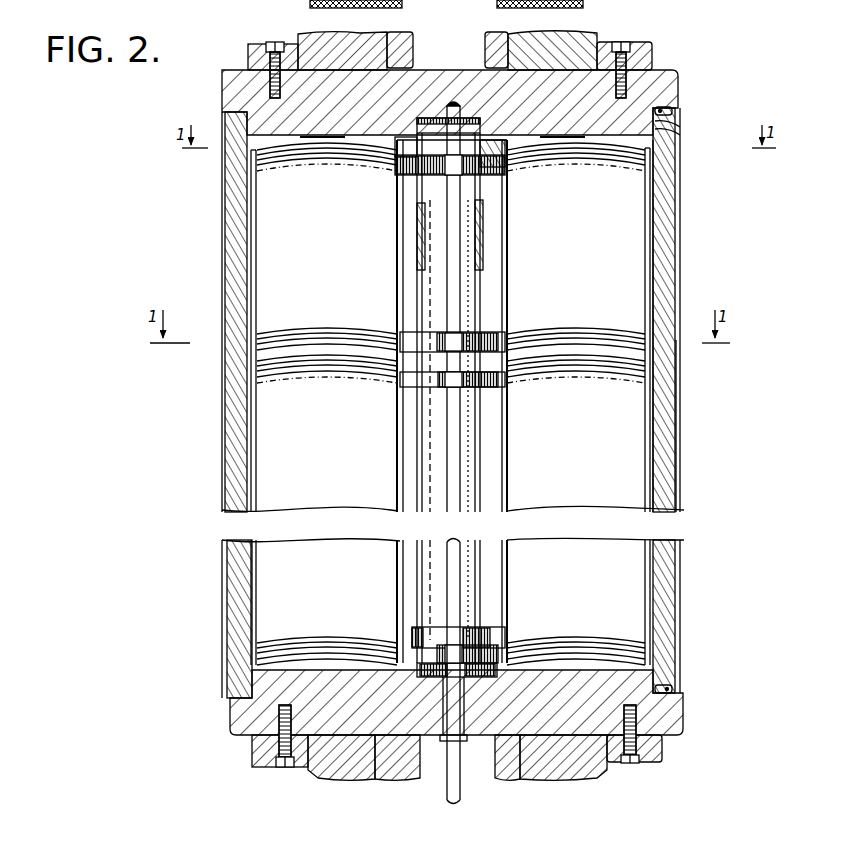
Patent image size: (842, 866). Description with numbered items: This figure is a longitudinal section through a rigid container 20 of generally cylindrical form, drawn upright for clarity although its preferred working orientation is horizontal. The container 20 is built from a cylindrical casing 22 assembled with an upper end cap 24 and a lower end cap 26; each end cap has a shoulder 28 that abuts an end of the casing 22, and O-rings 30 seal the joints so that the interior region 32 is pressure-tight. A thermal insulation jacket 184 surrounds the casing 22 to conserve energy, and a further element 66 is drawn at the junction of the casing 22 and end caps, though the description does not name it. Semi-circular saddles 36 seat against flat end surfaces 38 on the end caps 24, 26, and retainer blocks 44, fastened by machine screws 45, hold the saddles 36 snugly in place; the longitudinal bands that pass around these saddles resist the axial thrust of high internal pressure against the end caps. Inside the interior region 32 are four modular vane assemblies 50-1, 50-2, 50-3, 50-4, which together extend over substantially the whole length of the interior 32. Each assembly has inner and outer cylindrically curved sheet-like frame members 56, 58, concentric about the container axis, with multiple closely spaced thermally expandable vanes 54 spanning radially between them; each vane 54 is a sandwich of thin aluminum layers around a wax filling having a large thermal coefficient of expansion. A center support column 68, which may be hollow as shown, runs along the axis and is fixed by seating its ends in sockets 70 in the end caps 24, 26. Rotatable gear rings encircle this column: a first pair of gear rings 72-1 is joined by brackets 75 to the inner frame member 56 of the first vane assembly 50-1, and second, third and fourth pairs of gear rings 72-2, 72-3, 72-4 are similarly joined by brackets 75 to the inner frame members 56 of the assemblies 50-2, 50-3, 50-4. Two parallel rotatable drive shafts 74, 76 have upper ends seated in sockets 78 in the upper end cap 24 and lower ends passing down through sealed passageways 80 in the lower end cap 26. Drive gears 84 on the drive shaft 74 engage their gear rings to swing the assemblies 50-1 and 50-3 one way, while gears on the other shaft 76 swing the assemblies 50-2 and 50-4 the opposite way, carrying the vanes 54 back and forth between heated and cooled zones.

The rigid container 20 is at (684, 200).
The cylindrical casing 22 is at (666, 258).
The upper end cap 24 is at (404, 104).
The lower end cap 26 is at (376, 706).
The shoulder 28 is at (673, 110).
The O-ring 30 is at (681, 126).
The interior region 32 is at (624, 245).
The saddle 36 is at (322, 36).
The flat end surface 38 is at (488, 34).
The retainer block 44 is at (249, 52).
The machine screw 45 is at (273, 42).
The first modular vane assembly 50-1 is at (327, 195).
The second modular vane assembly 50-2 is at (576, 195).
The third modular vane assembly 50-3 is at (327, 496).
The fourth modular vane assembly 50-4 is at (576, 496).
The thermally expandable vane 54 is at (323, 136).
The inner frame member 56 is at (398, 290).
The outer frame member 58 is at (258, 279).
The outer skin 66 is at (236, 146).
The center support column 68 is at (483, 218).
The socket 70 is at (488, 122).
The first pair of gear rings 72-1 is at (506, 174).
The second pair of gear rings 72-2 is at (396, 165).
The third pair of gear rings 72-3 is at (506, 380).
The fourth pair of gear rings 72-4 is at (398, 372).
The drive shaft 74 is at (462, 262).
The bracket 75 is at (416, 183).
The drive shaft 76 is at (450, 796).
The socket 78 is at (456, 110).
The sealed passageway 80 is at (476, 768).
The drive gear 84 is at (412, 192).
The thermal insulation jacket 184 is at (682, 394).